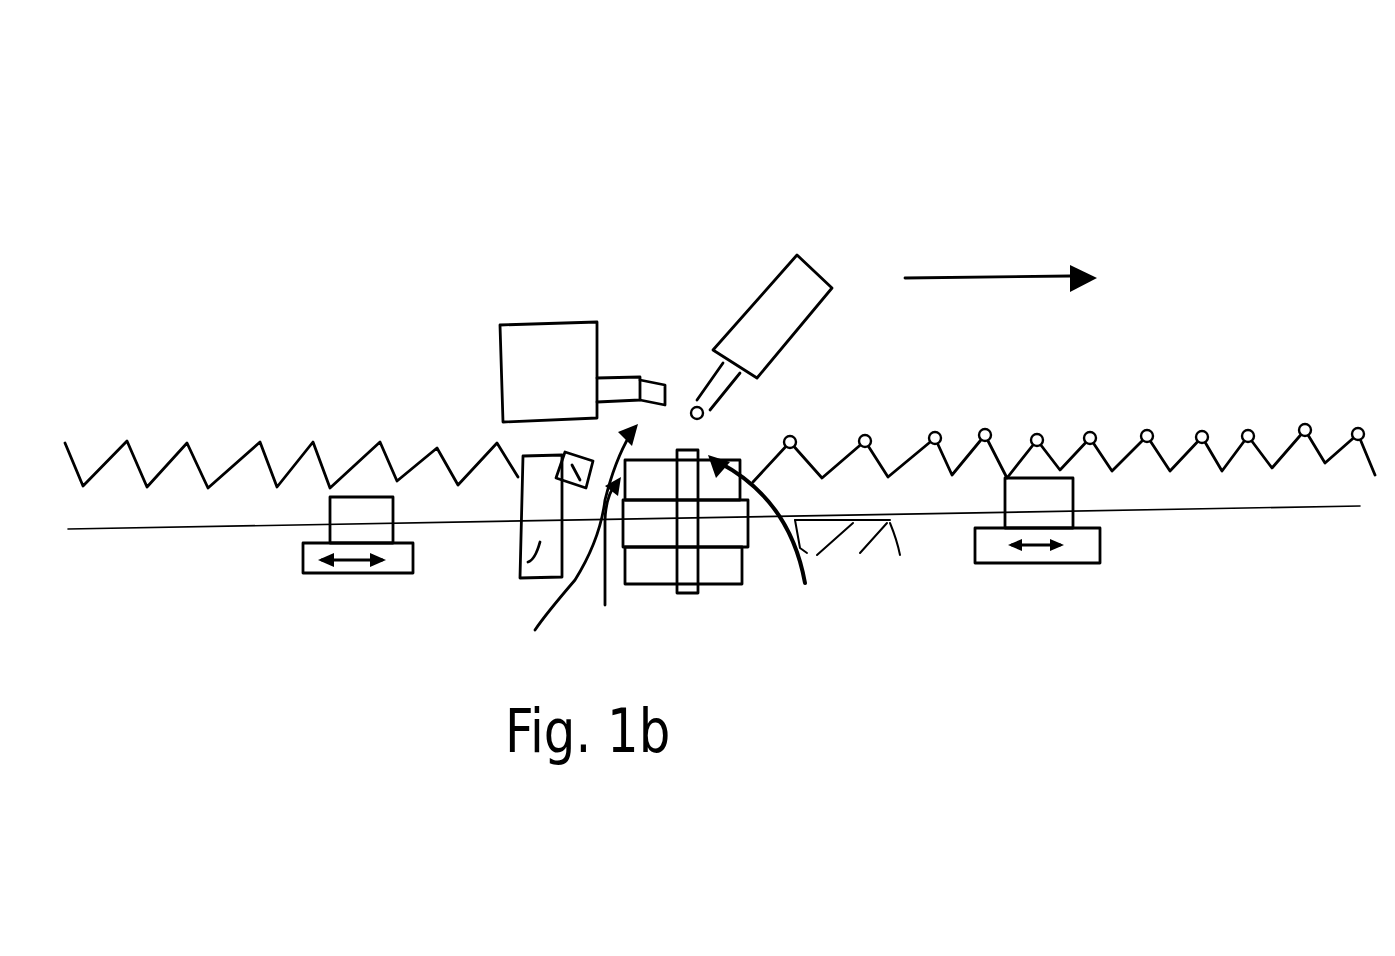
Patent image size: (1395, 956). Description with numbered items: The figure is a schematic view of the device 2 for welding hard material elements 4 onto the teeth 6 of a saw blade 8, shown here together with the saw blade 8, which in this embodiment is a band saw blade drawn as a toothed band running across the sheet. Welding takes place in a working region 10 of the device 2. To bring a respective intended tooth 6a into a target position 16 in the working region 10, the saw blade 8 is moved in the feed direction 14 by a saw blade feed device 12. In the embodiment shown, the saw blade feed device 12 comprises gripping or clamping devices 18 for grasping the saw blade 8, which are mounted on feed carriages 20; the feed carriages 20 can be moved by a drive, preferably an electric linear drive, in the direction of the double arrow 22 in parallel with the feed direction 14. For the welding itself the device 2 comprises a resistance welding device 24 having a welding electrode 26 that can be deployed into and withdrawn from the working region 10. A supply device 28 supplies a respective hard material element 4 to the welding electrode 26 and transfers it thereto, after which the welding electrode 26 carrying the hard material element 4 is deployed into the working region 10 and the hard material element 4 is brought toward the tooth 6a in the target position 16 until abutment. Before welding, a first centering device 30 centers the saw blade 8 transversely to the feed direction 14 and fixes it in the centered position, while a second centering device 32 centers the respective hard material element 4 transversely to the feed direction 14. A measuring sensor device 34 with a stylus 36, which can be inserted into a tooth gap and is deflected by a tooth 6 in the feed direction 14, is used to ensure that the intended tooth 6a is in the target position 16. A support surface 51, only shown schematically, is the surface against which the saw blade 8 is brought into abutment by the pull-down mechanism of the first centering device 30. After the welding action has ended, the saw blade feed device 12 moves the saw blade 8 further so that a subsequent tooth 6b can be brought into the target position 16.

The device 2 is at (235, 225).
The hard material elements 4 is at (703, 415).
The teeth 6 is at (188, 458).
The intended tooth 6a is at (779, 538).
The subsequent tooth 6b is at (601, 559).
The saw blade 8 is at (143, 513).
The working region 10 is at (563, 547).
The saw blade feed device 12 is at (737, 602).
The feed direction 14 is at (993, 277).
The target position 16 is at (680, 435).
The gripping or clamping devices 18 is at (380, 527).
The feed carriages 20 is at (408, 570).
The double arrow 22 is at (330, 568).
The resistance welding device 24 is at (750, 280).
The welding electrode 26 is at (720, 388).
The supply device 28 is at (556, 298).
The first centering device 30 is at (655, 480).
The second centering device 32 is at (685, 472).
The measuring sensor device 34 is at (525, 532).
The stylus 36 is at (566, 460).
The support surface 51 is at (847, 518).